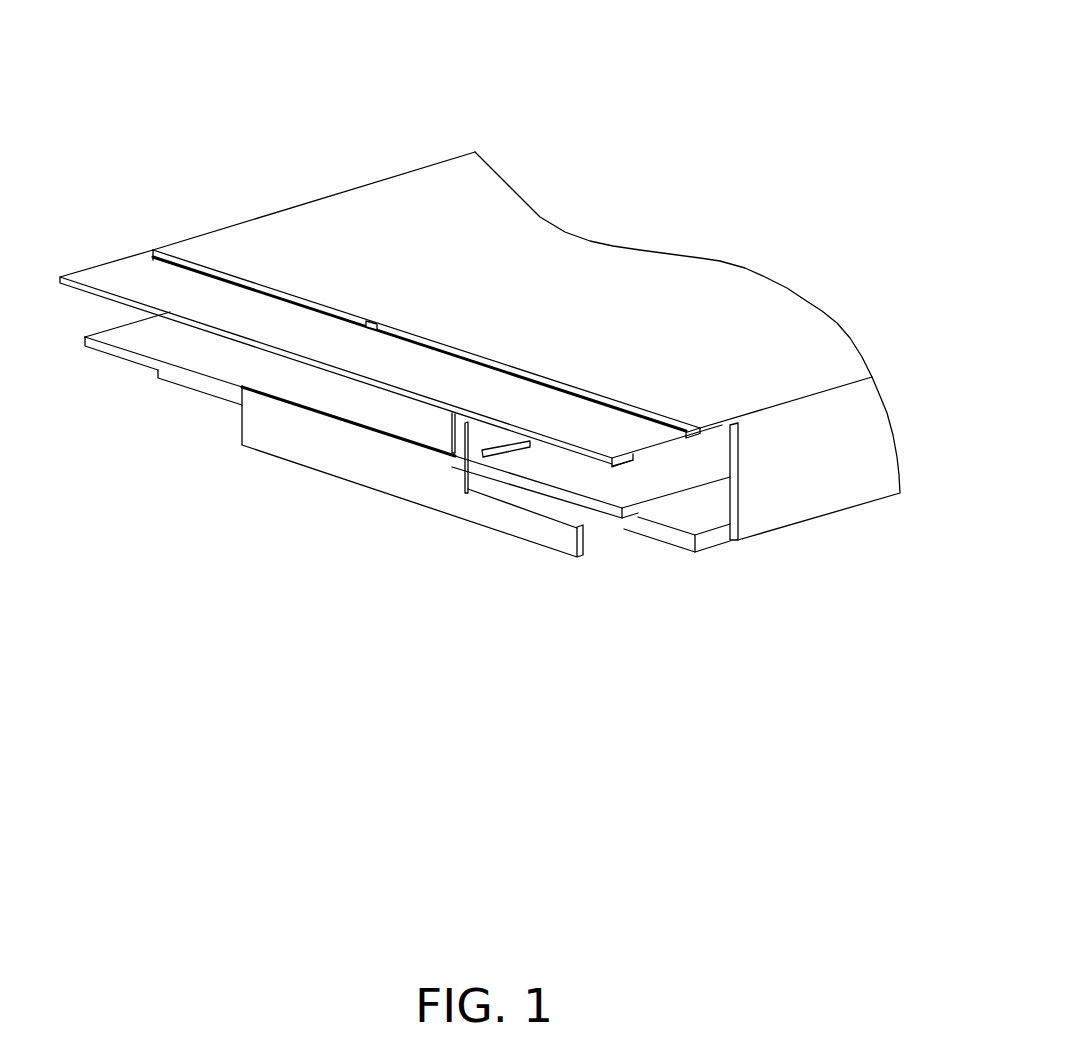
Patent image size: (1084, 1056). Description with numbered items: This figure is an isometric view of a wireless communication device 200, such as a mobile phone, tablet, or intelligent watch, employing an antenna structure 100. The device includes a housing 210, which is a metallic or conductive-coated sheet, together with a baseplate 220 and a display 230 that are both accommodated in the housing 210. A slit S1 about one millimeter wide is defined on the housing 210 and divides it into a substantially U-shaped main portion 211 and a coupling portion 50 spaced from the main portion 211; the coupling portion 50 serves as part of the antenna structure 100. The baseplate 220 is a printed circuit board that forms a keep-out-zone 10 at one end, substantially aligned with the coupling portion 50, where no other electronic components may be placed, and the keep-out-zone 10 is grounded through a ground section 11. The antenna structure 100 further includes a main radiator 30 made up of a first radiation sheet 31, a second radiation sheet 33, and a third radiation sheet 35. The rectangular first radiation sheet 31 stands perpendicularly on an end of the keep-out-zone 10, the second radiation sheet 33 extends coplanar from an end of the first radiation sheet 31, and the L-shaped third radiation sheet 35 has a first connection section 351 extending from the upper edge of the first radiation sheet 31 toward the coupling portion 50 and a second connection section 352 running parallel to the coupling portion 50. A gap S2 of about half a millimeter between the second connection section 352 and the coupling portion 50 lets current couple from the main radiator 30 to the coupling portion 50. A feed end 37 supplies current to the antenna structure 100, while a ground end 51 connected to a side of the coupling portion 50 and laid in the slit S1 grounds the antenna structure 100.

The wireless communication device 200 is at (533, 47).
The housing 210 is at (652, 265).
The main portion 211 is at (299, 231).
The baseplate 220 is at (705, 473).
The display 230 is at (702, 540).
The antenna structure 100 is at (233, 428).
The keep-out-zone 10 is at (628, 512).
The ground section 11 is at (550, 470).
The main radiator 30 is at (410, 650).
The first radiation sheet 31 is at (342, 460).
The second radiation sheet 33 is at (510, 522).
The third radiation sheet 35 is at (413, 588).
The first connection section 351 is at (450, 432).
The second connection section 352 is at (465, 447).
The feed end 37 is at (513, 444).
The coupling portion 50 is at (131, 269).
The ground end 51 is at (372, 321).
The slit S1 is at (183, 263).
The gap S2 is at (590, 463).